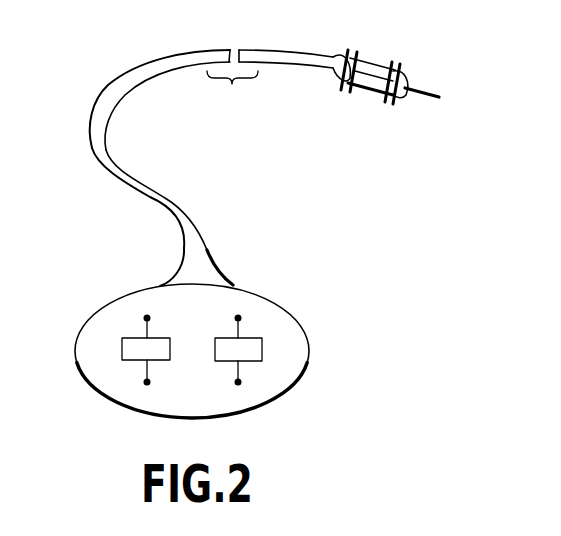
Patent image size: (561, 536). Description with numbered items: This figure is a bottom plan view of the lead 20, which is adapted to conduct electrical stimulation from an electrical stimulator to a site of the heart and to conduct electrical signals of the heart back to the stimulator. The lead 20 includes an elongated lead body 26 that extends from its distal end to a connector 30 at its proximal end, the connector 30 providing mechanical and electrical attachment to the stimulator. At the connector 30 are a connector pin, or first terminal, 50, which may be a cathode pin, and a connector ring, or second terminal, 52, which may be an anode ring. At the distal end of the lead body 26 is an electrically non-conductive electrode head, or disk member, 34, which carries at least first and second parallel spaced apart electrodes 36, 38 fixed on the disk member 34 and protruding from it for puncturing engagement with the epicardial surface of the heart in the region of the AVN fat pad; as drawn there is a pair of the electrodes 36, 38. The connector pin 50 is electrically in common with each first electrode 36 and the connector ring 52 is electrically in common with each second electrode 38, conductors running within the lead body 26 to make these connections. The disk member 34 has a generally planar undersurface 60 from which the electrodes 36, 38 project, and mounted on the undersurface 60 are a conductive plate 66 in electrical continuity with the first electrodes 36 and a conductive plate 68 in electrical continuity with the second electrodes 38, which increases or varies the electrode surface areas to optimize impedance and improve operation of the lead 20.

The lead 20 is at (136, 95).
The elongated lead body 26 is at (155, 193).
The connector 30 is at (400, 95).
The disk member 34 is at (315, 321).
The first electrodes 36 is at (241, 318).
The second electrodes 38 is at (146, 316).
The connector pin 50 is at (419, 94).
The connector ring 52 is at (372, 62).
The undersurface 60 is at (347, 387).
The conductive plate 66 is at (253, 355).
The conductive plate 68 is at (128, 350).